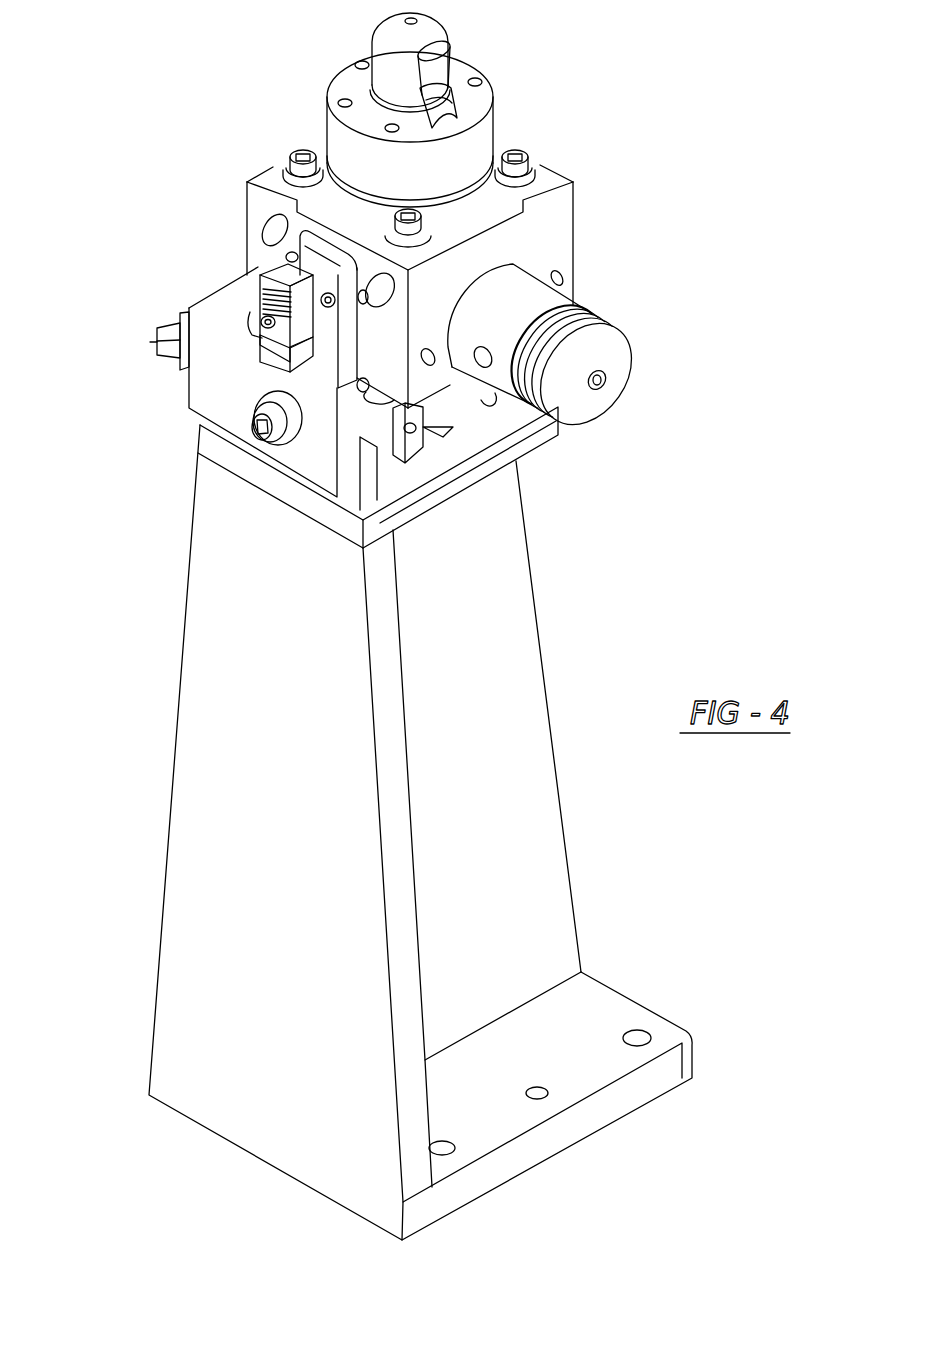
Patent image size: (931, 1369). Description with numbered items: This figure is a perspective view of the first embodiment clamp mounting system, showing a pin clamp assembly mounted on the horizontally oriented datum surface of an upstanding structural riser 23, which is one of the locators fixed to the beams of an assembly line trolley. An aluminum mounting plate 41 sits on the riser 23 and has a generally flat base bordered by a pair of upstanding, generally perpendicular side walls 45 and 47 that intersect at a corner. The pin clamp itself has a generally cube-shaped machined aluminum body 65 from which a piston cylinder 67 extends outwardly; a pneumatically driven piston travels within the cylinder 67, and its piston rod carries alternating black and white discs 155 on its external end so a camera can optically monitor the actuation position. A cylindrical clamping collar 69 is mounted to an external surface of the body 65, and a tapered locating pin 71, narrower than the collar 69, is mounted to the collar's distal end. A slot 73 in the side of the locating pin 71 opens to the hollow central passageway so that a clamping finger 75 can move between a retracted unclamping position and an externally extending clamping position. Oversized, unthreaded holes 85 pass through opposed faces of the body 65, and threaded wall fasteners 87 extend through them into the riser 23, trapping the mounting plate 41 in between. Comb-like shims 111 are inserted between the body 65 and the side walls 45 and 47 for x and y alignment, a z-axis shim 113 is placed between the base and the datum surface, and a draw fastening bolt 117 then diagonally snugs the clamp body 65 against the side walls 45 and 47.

The riser 23 is at (493, 680).
The mounting plate 41 is at (500, 420).
The side wall 45 is at (317, 403).
The side wall 47 is at (217, 313).
The body 65 is at (542, 231).
The piston cylinder 67 is at (515, 307).
The clamping collar 69 is at (347, 138).
The locating pin 71 is at (385, 38).
The slot 73 is at (428, 52).
The clamping finger 75 is at (457, 108).
The holes 85 is at (268, 228).
The wall fasteners 87 is at (520, 172).
The shims 111 is at (350, 385).
The z-axis shim 113 is at (487, 447).
The draw fastening bolt 117 is at (150, 340).
The discs 155 is at (605, 360).